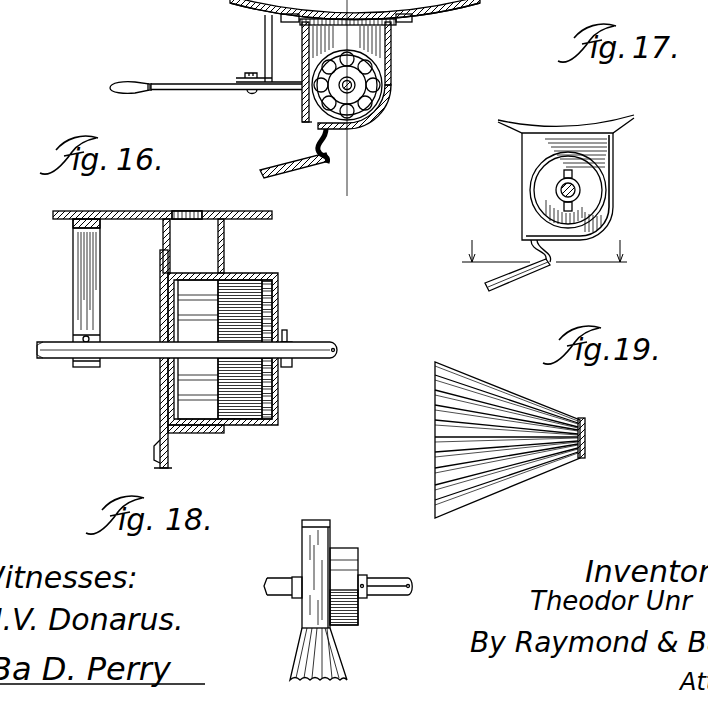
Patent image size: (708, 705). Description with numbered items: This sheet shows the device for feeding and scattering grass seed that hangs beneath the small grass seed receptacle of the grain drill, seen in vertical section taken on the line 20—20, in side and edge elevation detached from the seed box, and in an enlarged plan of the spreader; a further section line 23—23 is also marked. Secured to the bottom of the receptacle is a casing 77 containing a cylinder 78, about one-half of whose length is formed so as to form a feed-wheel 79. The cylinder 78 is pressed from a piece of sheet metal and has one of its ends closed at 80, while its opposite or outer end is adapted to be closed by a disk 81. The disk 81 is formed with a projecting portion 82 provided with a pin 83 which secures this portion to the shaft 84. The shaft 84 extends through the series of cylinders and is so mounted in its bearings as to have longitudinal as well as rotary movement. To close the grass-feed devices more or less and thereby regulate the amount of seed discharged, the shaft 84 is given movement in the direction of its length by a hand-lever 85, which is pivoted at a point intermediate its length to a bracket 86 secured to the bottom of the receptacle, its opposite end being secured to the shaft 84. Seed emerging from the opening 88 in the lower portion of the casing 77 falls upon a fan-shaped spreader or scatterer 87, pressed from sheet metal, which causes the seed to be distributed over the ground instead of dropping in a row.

In FIG. 16, the section line 20 is at (318, 188).
In FIG. 17, the section line 23 is at (539, 261).
In FIG. 16, the casing 77 is at (393, 45).
In FIG. 17, the casing 77 is at (533, 143).
In FIG. 16, the cylinder 78 is at (232, 426).
In FIG. 18, the cylinder 78 is at (347, 556).
In FIG. 16, the feed-wheel 79 is at (373, 102).
In FIG. 16, the closed end 80 is at (163, 295).
In FIG. 18, the closed end 80 is at (300, 551).
In FIG. 16, the disk 81 is at (278, 292).
In FIG. 17, the disk 81 is at (558, 163).
In FIG. 18, the disk 81 is at (318, 542).
In FIG. 16, the projecting portion 82 is at (292, 342).
In FIG. 18, the projecting portion 82 is at (364, 578).
In FIG. 16, the pin 83 is at (286, 330).
In FIG. 17, the pin 83 is at (572, 174).
In FIG. 16, the shaft 84 is at (354, 83).
In FIG. 17, the shaft 84 is at (580, 190).
In FIG. 18, the shaft 84 is at (380, 593).
In FIG. 16, the hand-lever 85 is at (200, 91).
In FIG. 16, the bracket 86 is at (263, 46).
In FIG. 16, the fan-shaped spreader 87 is at (262, 166).
In FIG. 17, the fan-shaped spreader 87 is at (508, 280).
In FIG. 19, the fan-shaped spreader 87 is at (530, 466).
In FIG. 18, the fan-shaped spreader 87 is at (317, 652).
In FIG. 16, the opening 88 is at (305, 125).